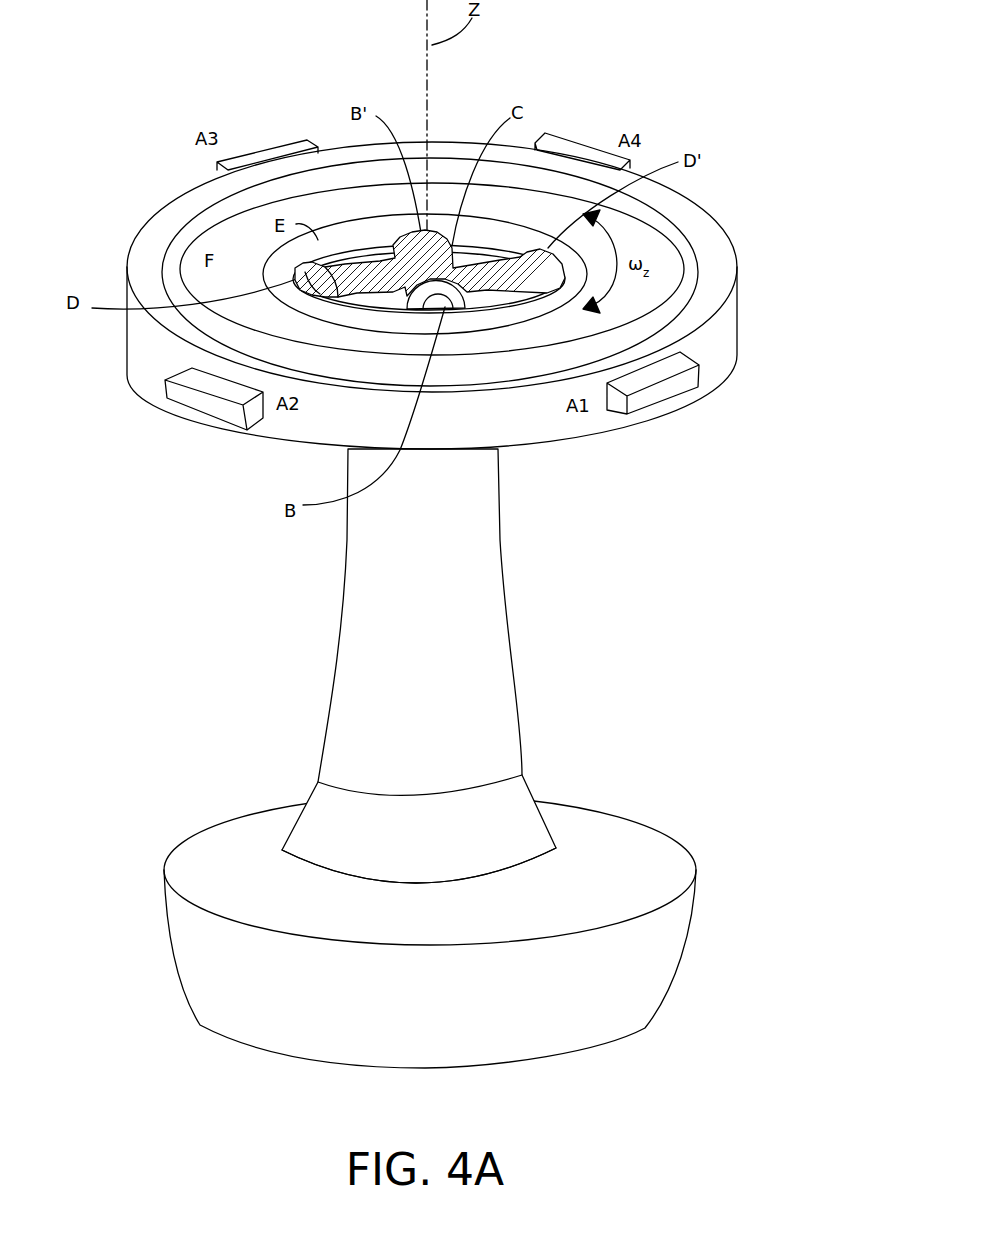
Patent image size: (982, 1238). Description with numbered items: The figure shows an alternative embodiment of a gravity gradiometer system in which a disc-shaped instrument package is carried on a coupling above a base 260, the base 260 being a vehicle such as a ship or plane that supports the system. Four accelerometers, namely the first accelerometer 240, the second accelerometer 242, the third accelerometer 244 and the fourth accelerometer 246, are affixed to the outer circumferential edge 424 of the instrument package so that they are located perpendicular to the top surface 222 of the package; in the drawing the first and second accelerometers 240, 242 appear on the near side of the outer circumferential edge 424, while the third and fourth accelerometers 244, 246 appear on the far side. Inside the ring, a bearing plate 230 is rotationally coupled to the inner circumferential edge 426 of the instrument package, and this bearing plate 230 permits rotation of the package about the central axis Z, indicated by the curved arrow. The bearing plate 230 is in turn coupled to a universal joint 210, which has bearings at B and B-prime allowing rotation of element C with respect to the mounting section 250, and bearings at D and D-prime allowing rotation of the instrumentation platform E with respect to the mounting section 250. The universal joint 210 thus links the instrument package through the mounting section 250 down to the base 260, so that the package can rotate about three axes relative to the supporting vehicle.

The universal joint 210 is at (463, 558).
The top surface 222 is at (716, 242).
The bearing plate 230 is at (487, 316).
The accelerometer A1 240 is at (668, 392).
The accelerometer A2 242 is at (221, 408).
The accelerometer A3 244 is at (288, 150).
The accelerometer A4 246 is at (572, 142).
The mounting section 250 is at (513, 820).
The base 260 is at (665, 942).
The outer circumferential edge 424 is at (162, 365).
The inner circumferential edge 426 is at (208, 217).